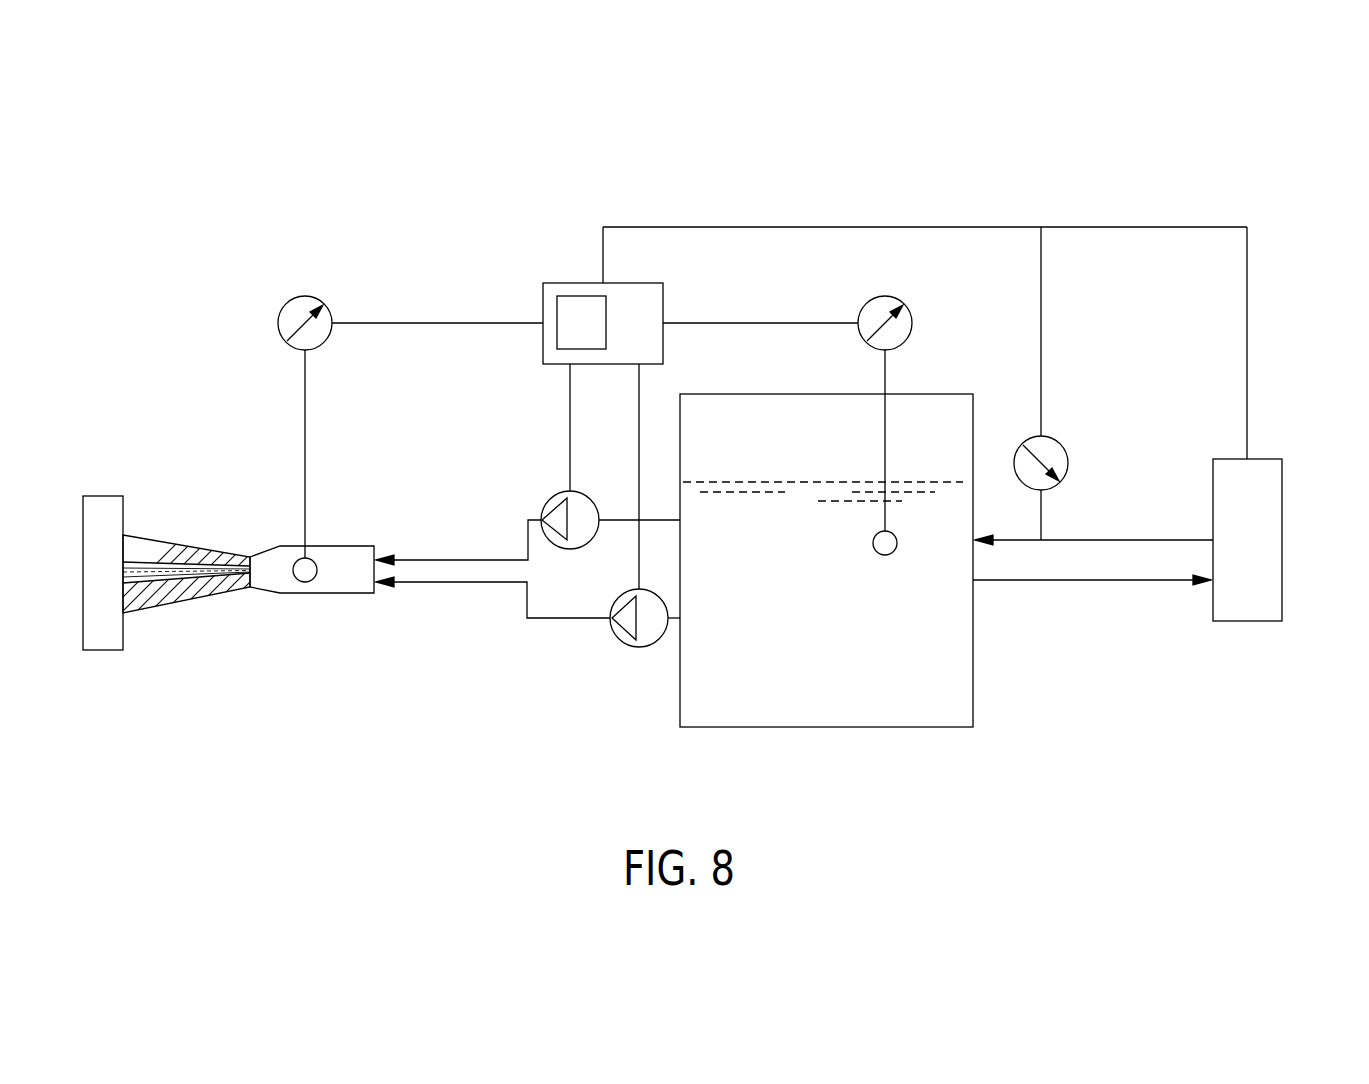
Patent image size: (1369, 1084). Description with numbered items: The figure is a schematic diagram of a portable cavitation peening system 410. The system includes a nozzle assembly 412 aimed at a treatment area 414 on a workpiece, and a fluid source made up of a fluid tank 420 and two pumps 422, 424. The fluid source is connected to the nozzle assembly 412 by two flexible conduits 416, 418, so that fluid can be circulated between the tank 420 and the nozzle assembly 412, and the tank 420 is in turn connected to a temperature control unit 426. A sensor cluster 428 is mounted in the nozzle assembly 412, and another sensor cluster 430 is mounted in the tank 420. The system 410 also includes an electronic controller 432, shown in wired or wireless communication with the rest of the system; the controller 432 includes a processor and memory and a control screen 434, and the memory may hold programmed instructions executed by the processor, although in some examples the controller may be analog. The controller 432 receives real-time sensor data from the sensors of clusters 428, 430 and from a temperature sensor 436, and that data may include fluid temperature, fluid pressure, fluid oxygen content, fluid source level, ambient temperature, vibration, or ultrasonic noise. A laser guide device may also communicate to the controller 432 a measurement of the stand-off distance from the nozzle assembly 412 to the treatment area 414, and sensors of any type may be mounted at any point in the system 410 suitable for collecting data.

The portable cavitation peening system 410 is at (383, 218).
The nozzle assembly 412 is at (322, 597).
The treatment area 414 is at (103, 495).
The flexible conduit 416 is at (460, 556).
The flexible conduit 418 is at (443, 587).
The fluid tank 420 is at (975, 655).
The pump 422 is at (548, 495).
The pump 424 is at (635, 648).
The temperature control unit 426 is at (1283, 488).
The sensor cluster 428 is at (299, 561).
The sensor cluster 430 is at (873, 544).
The electronic controller 432 is at (665, 303).
The control screen 434 is at (567, 296).
The temperature sensor 436 is at (1068, 456).